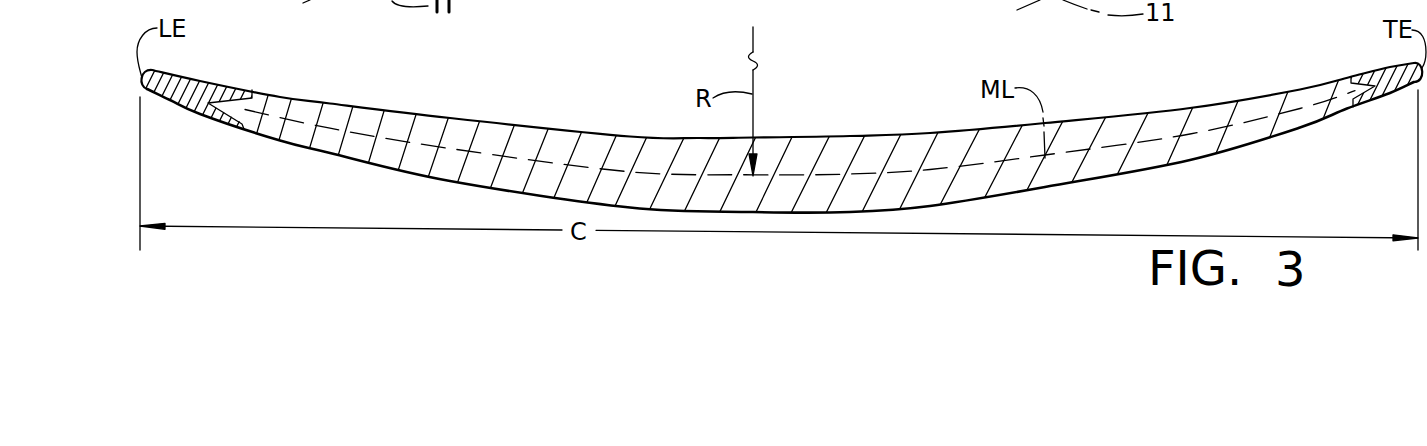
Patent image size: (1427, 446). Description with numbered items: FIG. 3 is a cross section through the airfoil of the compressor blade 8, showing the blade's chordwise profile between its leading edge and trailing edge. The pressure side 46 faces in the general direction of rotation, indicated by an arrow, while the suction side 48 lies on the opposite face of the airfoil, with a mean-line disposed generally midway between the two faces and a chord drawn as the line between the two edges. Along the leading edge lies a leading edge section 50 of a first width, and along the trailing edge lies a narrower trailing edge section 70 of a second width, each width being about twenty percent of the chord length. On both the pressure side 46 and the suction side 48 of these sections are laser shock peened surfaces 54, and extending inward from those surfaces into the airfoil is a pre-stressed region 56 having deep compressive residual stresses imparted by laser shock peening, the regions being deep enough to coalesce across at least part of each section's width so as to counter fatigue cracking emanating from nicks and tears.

The compressor blade 8 is at (780, 135).
The pressure side 46 is at (530, 126).
The suction side 48 is at (440, 179).
The leading edge section 50 is at (143, 88).
The laser shock peened surfaces 54 is at (170, 71).
The pre-stressed region 56 is at (220, 100).
The trailing edge section 70 is at (1410, 94).